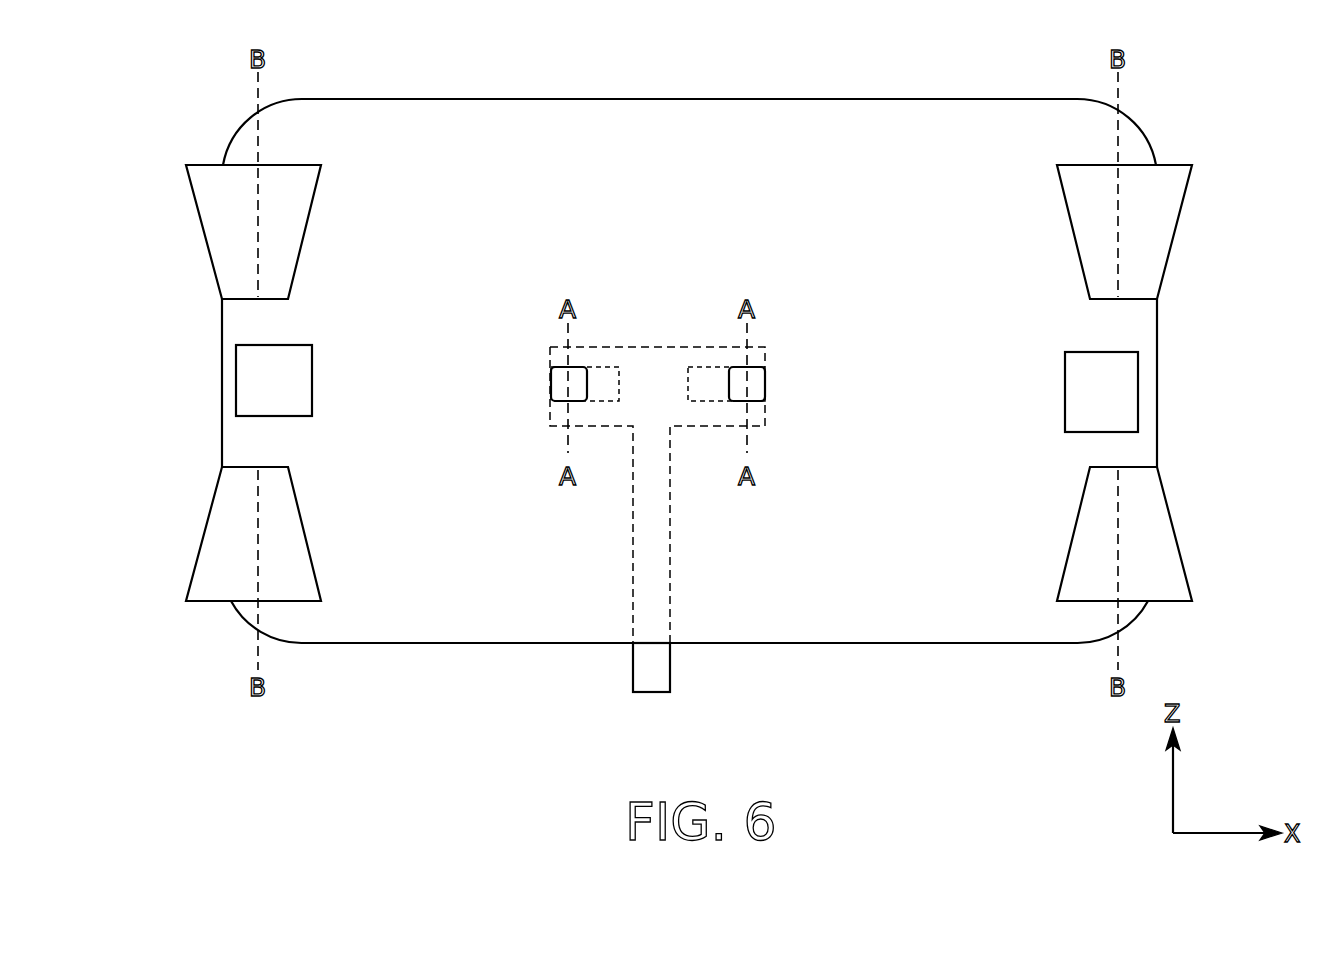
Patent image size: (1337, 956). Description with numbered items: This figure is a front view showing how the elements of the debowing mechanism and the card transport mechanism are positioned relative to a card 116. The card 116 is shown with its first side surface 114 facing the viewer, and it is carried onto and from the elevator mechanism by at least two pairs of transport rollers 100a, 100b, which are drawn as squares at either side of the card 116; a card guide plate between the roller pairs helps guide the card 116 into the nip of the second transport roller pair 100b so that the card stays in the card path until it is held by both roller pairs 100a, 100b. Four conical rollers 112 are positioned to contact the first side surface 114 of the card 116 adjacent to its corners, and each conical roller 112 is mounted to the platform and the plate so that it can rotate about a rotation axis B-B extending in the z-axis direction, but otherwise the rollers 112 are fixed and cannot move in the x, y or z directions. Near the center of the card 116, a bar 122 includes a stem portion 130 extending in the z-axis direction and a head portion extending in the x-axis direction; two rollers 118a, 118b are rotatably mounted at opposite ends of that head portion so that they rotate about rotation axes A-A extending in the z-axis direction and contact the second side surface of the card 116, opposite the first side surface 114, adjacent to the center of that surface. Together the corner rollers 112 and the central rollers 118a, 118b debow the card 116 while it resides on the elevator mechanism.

The transport roller pair 100a is at (1138, 390).
The second transport roller pair 100b is at (236, 380).
The conical roller 112 is at (206, 233).
The first side surface 114 is at (825, 135).
The card 116 is at (927, 644).
The roller 118a is at (765, 385).
The roller 118b is at (551, 383).
The bar 122 is at (690, 670).
The stem portion 130 is at (672, 548).